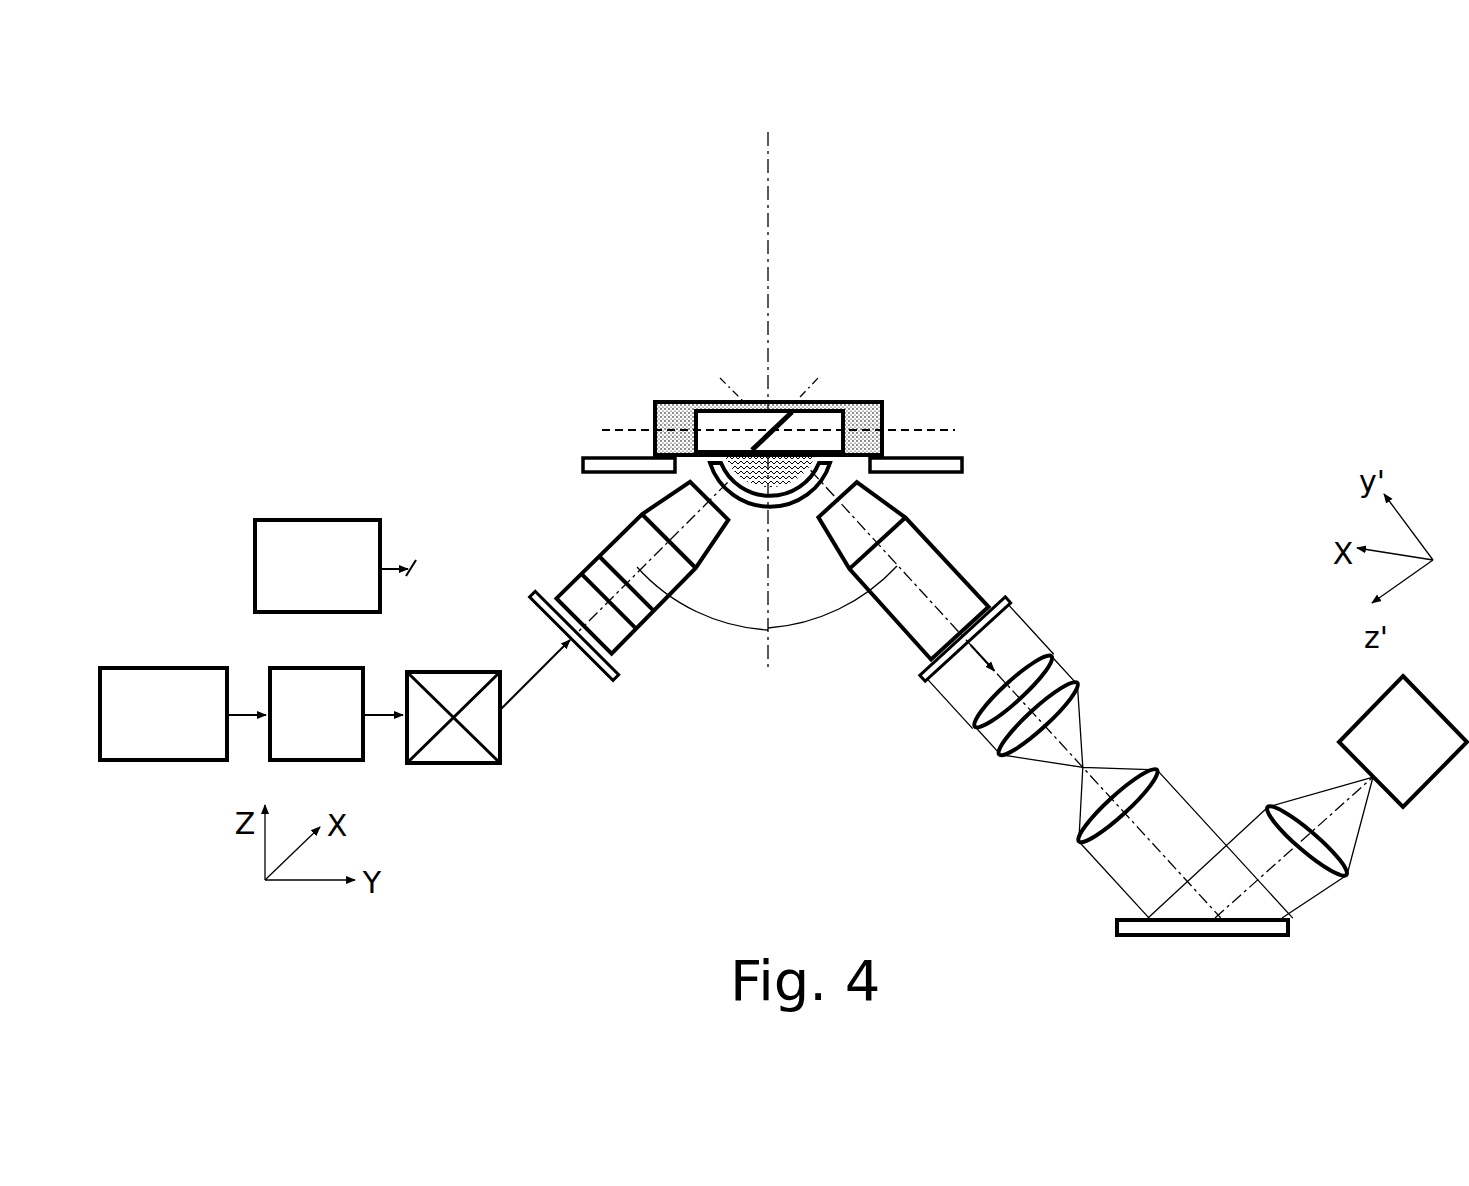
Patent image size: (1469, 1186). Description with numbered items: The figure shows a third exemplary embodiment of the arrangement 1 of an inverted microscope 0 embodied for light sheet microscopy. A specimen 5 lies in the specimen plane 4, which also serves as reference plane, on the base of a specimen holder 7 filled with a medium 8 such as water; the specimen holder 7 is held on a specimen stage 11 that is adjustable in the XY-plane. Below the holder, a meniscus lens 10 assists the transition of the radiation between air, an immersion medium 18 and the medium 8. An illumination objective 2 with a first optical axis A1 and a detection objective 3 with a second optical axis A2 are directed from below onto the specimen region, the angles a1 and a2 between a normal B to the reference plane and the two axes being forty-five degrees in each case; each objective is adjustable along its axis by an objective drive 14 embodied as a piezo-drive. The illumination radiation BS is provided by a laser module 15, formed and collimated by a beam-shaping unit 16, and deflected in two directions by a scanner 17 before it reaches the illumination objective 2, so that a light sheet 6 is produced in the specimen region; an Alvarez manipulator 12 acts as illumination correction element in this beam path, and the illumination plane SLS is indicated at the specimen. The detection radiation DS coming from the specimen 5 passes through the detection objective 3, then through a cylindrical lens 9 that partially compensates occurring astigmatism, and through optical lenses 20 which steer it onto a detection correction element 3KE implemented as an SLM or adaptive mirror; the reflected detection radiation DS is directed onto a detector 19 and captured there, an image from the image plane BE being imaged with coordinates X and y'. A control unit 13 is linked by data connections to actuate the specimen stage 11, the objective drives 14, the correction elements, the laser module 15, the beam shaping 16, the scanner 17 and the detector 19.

The inverted microscope 0 is at (537, 200).
The arrangement 1 is at (607, 255).
The illumination objective 2 is at (628, 537).
The detection objective 3 is at (982, 598).
The specimen plane 4 is at (912, 430).
The specimen 5 is at (820, 427).
The light sheet 6 is at (778, 405).
The specimen holder 7 is at (655, 425).
The medium 8 is at (667, 408).
The cylindrical lens 9 is at (1052, 655).
The meniscus lens 10 is at (710, 468).
The specimen stage 11 is at (583, 458).
The Alvarez manipulator 12 is at (578, 570).
The control unit 13 is at (296, 589).
The objective drive 14 is at (535, 593).
The laser module 15 is at (143, 737).
The beam-shaping unit 16 is at (296, 737).
The scanner 17 is at (452, 765).
The immersion medium 18 is at (797, 487).
The detector 19 is at (1383, 764).
The optical lenses 20 is at (1080, 680).
The normal B is at (769, 140).
The image plane BE is at (763, 407).
The light sheet plane SLS is at (845, 462).
The first optical axis A1 is at (625, 645).
The second optical axis A2 is at (858, 492).
The angle α1 a1 is at (713, 622).
The angle α2 a2 is at (852, 610).
The illumination radiation BS is at (550, 657).
The detection radiation DS is at (983, 665).
The detection correction element 3KE is at (1118, 920).